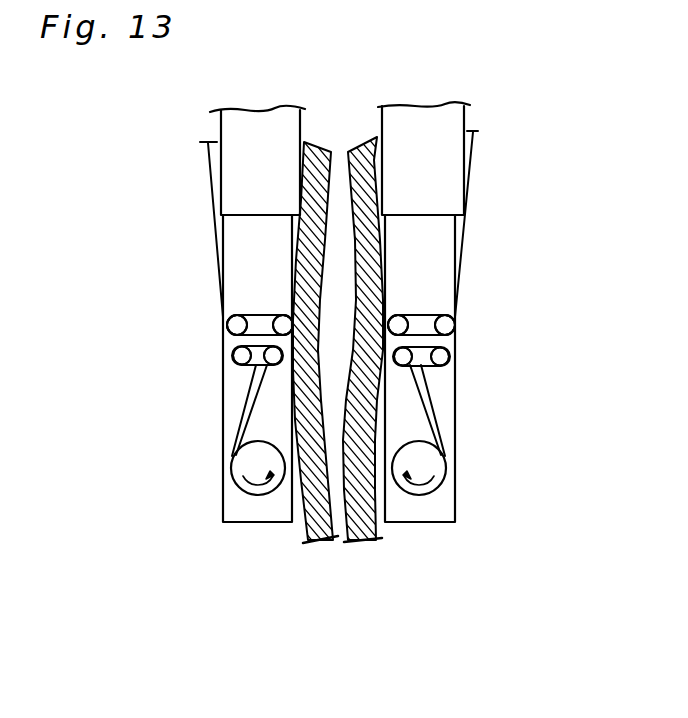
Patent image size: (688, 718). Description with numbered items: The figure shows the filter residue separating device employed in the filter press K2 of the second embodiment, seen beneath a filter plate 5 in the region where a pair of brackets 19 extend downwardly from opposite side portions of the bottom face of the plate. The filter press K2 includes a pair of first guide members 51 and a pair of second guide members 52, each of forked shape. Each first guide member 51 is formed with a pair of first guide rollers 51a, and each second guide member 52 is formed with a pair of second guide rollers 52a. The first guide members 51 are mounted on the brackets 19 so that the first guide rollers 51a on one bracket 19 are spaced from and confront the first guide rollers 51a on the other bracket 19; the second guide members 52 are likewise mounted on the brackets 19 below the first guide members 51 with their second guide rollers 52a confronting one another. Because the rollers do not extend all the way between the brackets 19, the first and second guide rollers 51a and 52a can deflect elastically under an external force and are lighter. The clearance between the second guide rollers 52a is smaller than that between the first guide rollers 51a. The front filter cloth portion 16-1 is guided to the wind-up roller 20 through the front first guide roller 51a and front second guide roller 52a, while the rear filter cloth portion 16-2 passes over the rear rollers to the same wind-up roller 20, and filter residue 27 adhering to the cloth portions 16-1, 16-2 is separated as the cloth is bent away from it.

The filter plate 5 is at (240, 131).
The filter cloth portion 16-1 is at (208, 178).
The filter cloth portion 16-2 is at (297, 228).
The bracket 19 is at (248, 510).
The wind-up roller 20 is at (247, 465).
The filter residue 27 is at (353, 150).
The first guide member 51 is at (263, 308).
The first guide roller 51a is at (282, 322).
The second guide member 52 is at (268, 377).
The second guide roller 52a is at (273, 358).
The filter press K2 is at (473, 420).